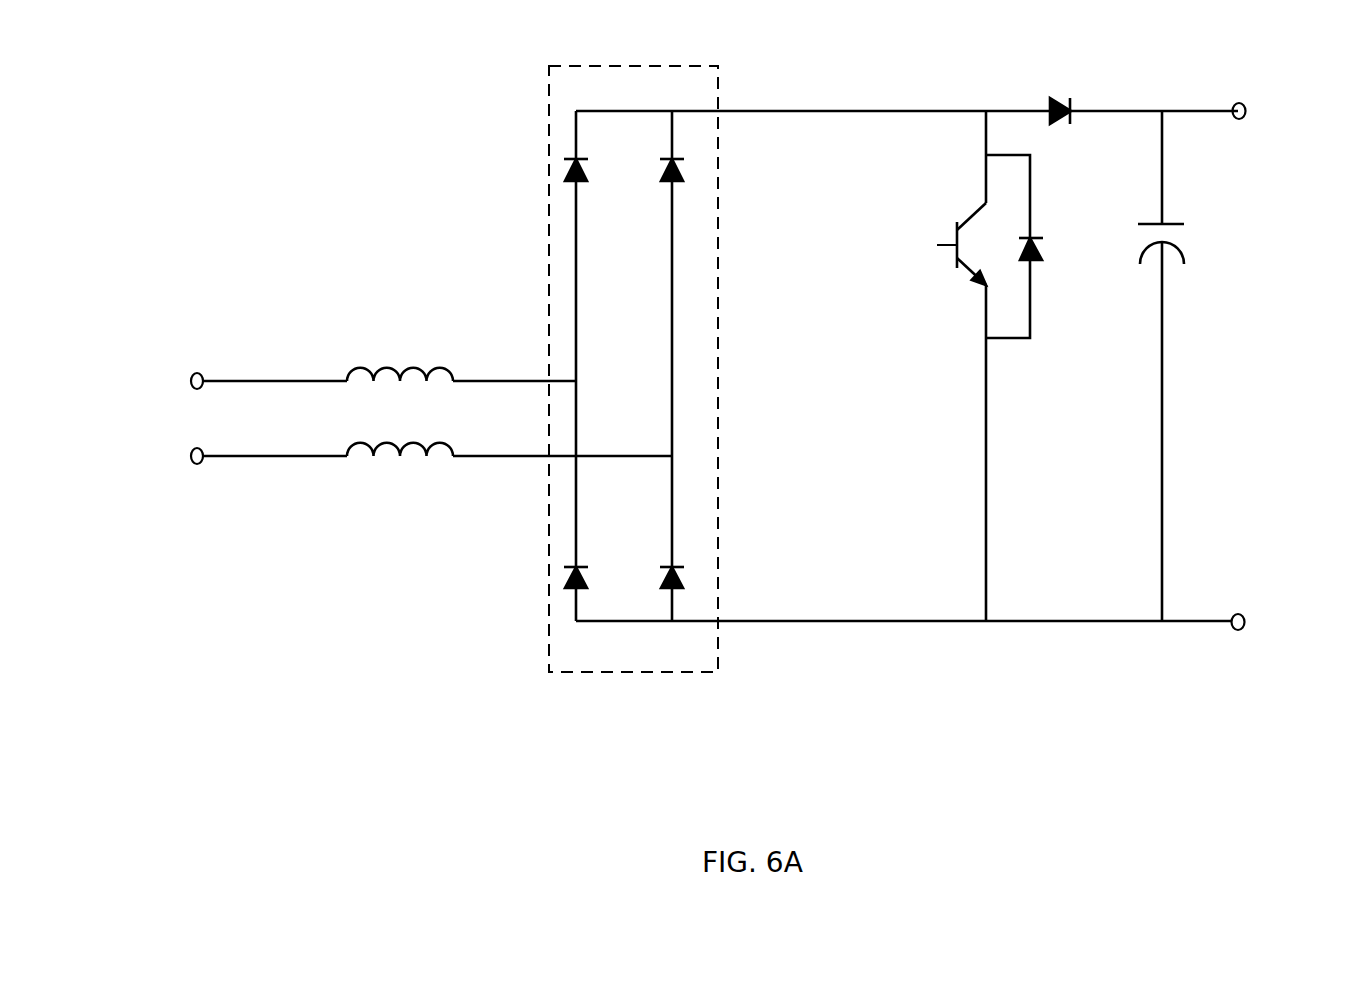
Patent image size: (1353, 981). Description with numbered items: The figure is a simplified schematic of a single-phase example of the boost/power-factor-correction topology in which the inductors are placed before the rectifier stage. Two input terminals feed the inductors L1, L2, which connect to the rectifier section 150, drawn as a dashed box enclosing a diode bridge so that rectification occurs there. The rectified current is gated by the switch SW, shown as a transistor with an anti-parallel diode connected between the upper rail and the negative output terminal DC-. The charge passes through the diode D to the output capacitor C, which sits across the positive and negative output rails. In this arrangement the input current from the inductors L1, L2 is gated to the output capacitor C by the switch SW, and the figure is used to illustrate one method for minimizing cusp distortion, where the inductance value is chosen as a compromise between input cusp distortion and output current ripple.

The rectifier section 150 is at (767, 389).
The inductor L1 is at (383, 361).
The inductor L2 is at (431, 436).
The switch SW is at (989, 366).
The diode D is at (1112, 96).
The output capacitor C is at (1173, 366).
The negative DC output terminal DC- is at (1144, 626).